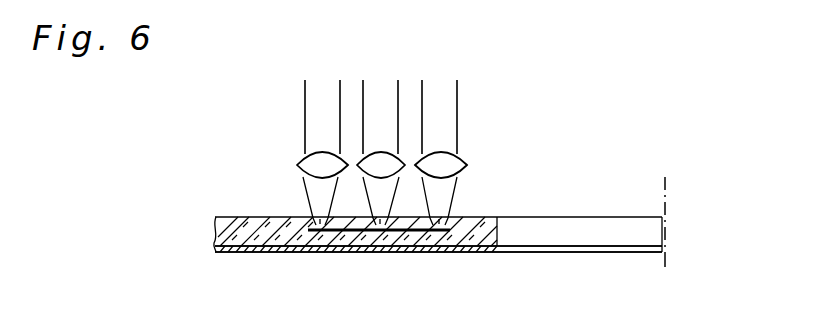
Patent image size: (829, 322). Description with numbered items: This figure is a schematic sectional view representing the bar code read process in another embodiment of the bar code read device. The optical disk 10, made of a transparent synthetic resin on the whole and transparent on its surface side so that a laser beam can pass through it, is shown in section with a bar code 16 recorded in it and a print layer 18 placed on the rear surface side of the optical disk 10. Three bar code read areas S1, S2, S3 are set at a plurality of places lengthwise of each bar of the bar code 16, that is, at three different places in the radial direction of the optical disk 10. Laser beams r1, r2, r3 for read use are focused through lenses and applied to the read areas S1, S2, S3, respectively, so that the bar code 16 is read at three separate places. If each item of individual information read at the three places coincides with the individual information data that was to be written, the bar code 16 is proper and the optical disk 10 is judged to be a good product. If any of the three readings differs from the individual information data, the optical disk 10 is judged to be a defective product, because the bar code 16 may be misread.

The optical disk 10 is at (579, 217).
The bar code 16 is at (413, 233).
The print layer 18 is at (472, 253).
The laser beam r1 is at (315, 112).
The laser beam r2 is at (372, 100).
The laser beam r3 is at (443, 100).
The bar code read area S1 is at (317, 198).
The bar code read area S2 is at (377, 188).
The bar code read area S3 is at (443, 188).